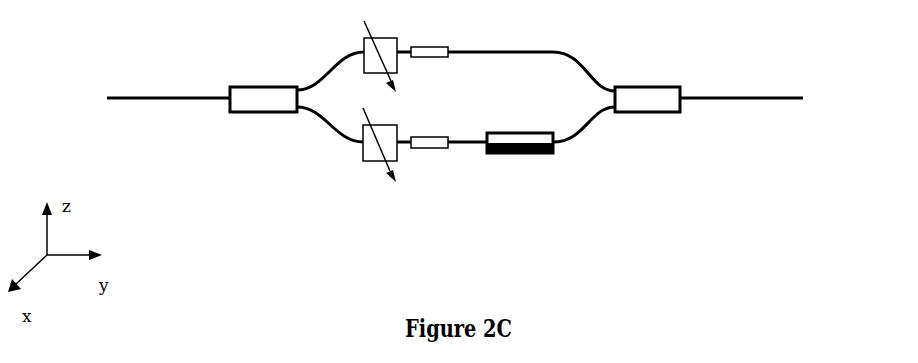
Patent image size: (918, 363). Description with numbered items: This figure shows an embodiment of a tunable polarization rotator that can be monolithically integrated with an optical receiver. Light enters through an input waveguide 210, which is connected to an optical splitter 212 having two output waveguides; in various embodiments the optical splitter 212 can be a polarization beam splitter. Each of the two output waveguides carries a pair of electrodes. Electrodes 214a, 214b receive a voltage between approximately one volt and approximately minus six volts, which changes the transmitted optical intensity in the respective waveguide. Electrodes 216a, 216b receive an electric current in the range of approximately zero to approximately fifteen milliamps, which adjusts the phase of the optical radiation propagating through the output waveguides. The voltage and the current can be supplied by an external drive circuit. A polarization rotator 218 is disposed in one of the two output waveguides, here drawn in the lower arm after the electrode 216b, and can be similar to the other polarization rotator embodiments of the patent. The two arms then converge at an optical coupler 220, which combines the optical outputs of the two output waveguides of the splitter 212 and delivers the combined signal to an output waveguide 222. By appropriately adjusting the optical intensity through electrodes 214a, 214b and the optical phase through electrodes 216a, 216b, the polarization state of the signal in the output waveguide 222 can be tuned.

The input waveguide 210 is at (158, 105).
The optical splitter 212 is at (263, 113).
The electrode 214a is at (397, 65).
The electrode 214b is at (378, 163).
The electrode 216a is at (440, 57).
The electrode 216b is at (422, 153).
The polarization rotator 218 is at (522, 153).
The optical coupler 220 is at (645, 115).
The output waveguide 222 is at (723, 105).